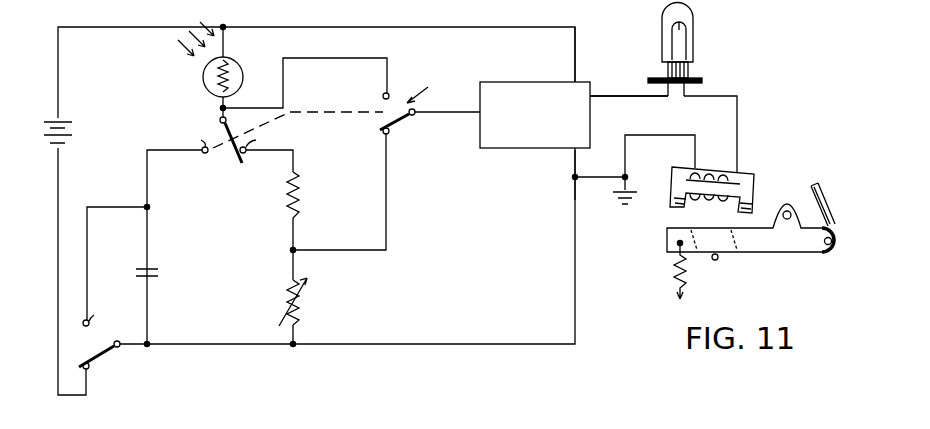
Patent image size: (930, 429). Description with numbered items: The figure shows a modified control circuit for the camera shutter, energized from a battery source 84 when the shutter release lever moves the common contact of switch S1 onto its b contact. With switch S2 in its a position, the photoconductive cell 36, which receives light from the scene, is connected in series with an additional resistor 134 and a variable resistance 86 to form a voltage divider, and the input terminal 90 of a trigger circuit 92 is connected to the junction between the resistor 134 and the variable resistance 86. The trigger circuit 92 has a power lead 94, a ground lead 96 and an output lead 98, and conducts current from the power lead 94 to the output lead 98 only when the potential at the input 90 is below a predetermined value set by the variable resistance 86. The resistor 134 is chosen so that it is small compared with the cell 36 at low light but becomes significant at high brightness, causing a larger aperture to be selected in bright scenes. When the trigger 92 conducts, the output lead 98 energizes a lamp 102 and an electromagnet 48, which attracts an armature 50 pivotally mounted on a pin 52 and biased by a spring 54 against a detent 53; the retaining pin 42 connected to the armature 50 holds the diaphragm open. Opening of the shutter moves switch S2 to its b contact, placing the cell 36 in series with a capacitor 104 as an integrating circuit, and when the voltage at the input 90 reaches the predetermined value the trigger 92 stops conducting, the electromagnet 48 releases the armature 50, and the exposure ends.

The photoconductive cell 36 is at (232, 60).
The battery source 84 is at (72, 130).
The capacitor 104 is at (160, 272).
The additional resistor 134 is at (301, 198).
The variable resistance 86 is at (303, 313).
The input terminal 90 is at (420, 118).
The trigger circuit 92 is at (500, 82).
The power lead 94 is at (578, 48).
The ground lead 96 is at (575, 166).
The output lead 98 is at (625, 96).
The lamp 102 is at (688, 38).
The electromagnet 48 is at (745, 172).
The armature 50 is at (777, 246).
The pin 52 is at (788, 210).
The retaining pin 42 is at (828, 209).
The detent 53 is at (713, 261).
The spring 54 is at (673, 276).
The switch S1 is at (114, 359).
The switch S2 is at (227, 156).